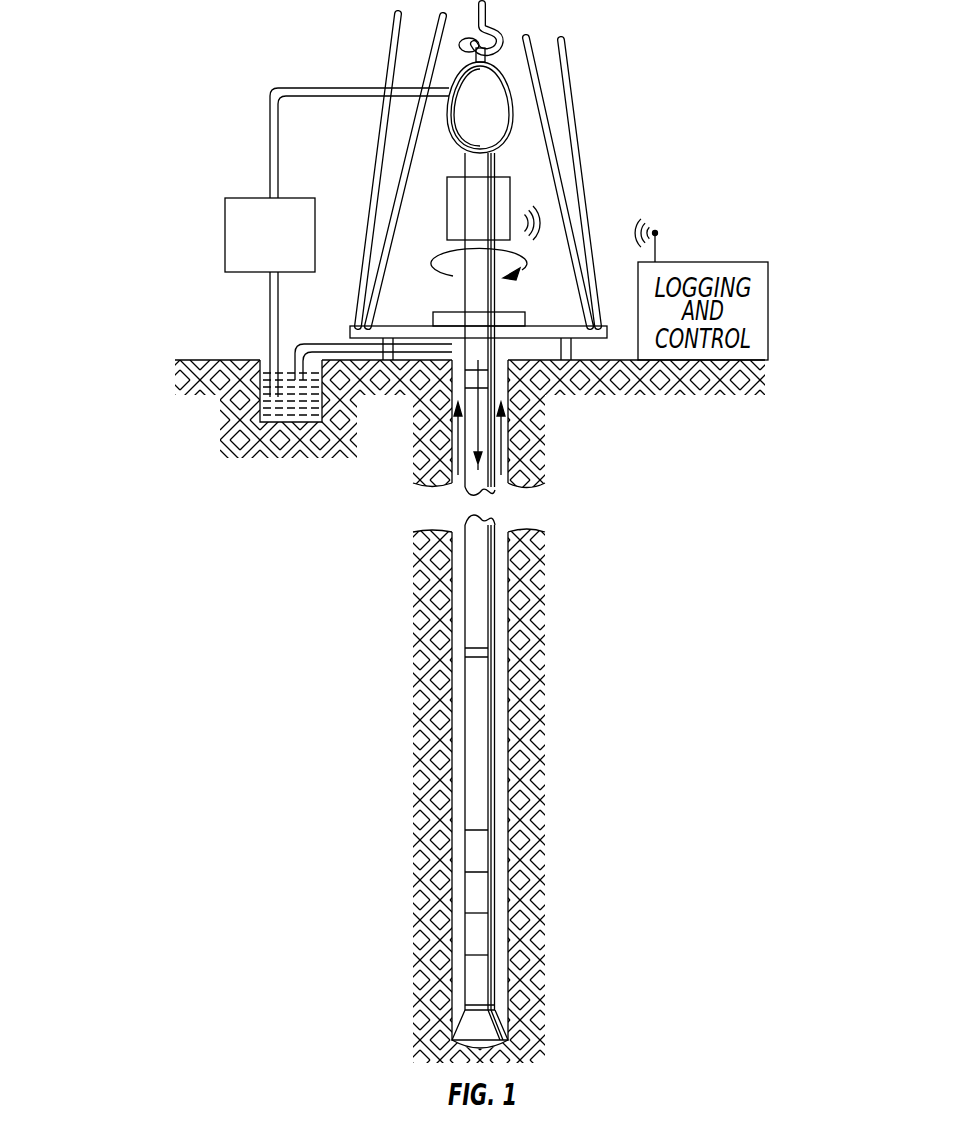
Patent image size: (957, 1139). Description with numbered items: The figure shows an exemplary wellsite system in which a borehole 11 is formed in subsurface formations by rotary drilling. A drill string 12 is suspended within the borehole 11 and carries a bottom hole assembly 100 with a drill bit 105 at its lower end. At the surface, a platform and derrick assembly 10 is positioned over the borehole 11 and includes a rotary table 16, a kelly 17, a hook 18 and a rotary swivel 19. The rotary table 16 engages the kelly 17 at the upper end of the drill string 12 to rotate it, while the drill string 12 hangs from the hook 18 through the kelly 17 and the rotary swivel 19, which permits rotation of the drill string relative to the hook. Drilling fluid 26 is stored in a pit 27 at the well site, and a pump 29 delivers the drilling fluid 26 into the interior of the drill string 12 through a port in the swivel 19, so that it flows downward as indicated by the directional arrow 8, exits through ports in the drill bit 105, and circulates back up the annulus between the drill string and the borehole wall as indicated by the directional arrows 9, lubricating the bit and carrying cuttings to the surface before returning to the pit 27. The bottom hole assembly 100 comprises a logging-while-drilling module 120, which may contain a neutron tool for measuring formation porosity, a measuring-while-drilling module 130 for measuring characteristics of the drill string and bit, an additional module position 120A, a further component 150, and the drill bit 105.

The platform and derrick assembly 10 is at (584, 109).
The hook 18 is at (487, 11).
The rotary swivel 19 is at (465, 122).
The kelly 17 is at (475, 293).
The rotary table 16 is at (500, 358).
The borehole 11 is at (521, 326).
The drill string 12 is at (478, 358).
The pump 29 is at (245, 273).
The pit 27 is at (263, 360).
The drilling fluid 26 is at (288, 424).
The directional arrows 9 is at (500, 428).
The directional arrow 8 is at (477, 446).
The bottom hole assembly 100 is at (507, 791).
The logging-while-drilling module 120 is at (478, 850).
The measuring-while-drilling module 130 is at (478, 892).
The additional LWD and/or MWD module 120A is at (478, 936).
The tool sub 150 is at (478, 980).
The drill bit 105 is at (478, 1027).